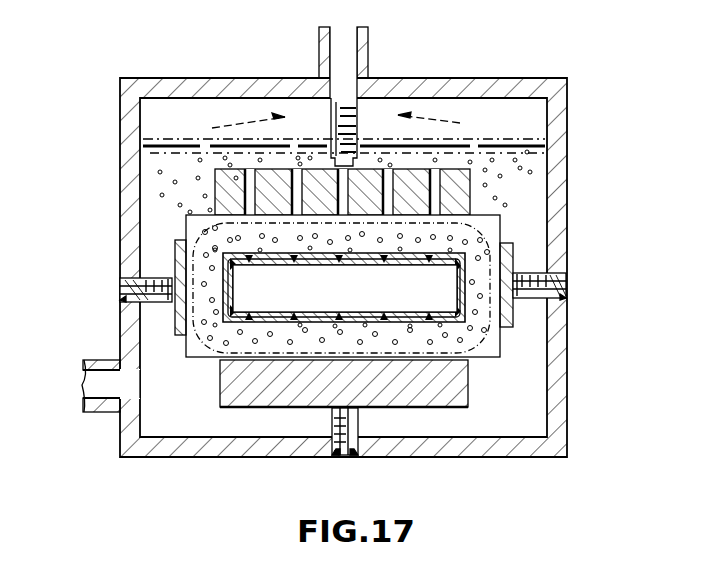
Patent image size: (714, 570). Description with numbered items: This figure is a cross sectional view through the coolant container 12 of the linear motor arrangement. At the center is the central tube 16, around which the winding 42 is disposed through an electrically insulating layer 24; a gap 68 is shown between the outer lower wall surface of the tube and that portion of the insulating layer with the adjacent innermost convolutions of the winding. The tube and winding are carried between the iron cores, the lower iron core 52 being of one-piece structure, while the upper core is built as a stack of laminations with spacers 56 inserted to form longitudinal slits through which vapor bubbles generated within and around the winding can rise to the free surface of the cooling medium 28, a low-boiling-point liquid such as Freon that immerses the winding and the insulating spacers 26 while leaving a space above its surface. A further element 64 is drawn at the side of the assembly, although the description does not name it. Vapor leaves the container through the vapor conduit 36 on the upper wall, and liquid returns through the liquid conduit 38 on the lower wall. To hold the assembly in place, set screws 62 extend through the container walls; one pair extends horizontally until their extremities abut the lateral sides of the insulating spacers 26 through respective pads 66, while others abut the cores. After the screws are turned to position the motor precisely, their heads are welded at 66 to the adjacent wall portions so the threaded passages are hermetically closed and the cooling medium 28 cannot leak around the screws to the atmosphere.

The container 12 is at (231, 78).
The vapor conduit 36 is at (370, 55).
The spacer 56 is at (388, 178).
The cooling medium 28 is at (542, 157).
The winding 42 is at (501, 211).
The insulating spacer 26 is at (505, 228).
The central tube 16 is at (322, 314).
The electrically insulating layer 24 is at (338, 318).
The gap 68 is at (428, 323).
The end plate 64 is at (178, 338).
The lower iron core 52 is at (470, 387).
The liquid conduit 38 is at (96, 362).
The set screw 62 is at (128, 286).
The pad 66 is at (122, 300).